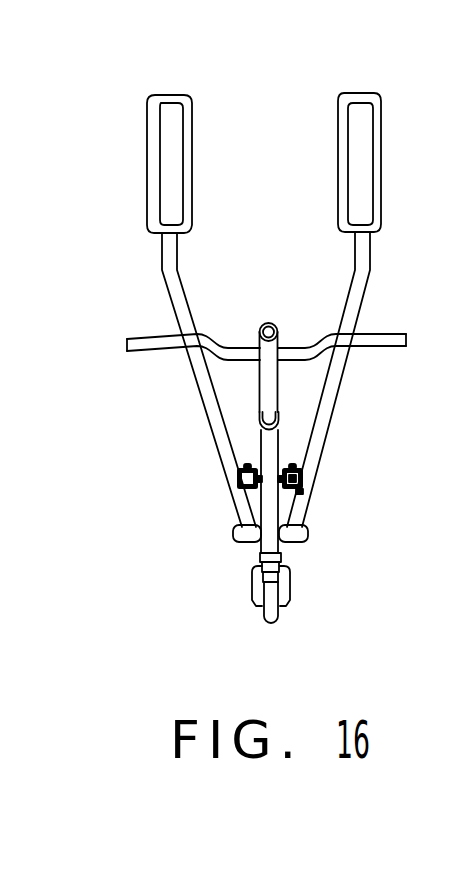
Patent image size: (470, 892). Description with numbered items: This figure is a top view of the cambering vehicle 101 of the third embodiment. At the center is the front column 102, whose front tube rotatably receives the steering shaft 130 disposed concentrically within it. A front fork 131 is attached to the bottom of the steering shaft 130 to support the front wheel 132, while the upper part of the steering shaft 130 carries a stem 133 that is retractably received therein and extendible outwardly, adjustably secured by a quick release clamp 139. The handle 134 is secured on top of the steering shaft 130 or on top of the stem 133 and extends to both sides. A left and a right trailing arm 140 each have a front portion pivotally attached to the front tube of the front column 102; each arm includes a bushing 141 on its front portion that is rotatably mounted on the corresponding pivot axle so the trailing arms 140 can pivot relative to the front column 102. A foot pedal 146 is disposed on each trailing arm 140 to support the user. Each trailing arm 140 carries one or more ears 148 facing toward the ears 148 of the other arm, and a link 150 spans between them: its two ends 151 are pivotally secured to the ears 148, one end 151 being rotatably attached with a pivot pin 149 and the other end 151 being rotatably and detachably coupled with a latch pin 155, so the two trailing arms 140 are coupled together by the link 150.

The cambering vehicle 101 is at (86, 312).
The front column 102 is at (231, 567).
The steering shaft 130 is at (268, 493).
The front fork 131 is at (291, 592).
The front wheel 132 is at (268, 617).
The stem 133 is at (279, 379).
The handle 134 is at (400, 334).
The quick release clamp 139 is at (259, 418).
The trailing arm 140 is at (310, 474).
The bushing 141 is at (232, 535).
The foot pedal 146 is at (147, 126).
The ear 148 is at (310, 463).
The pivot pin 149 is at (300, 501).
The link 150 is at (289, 466).
The end 151 is at (299, 471).
The latch pin 155 is at (242, 470).